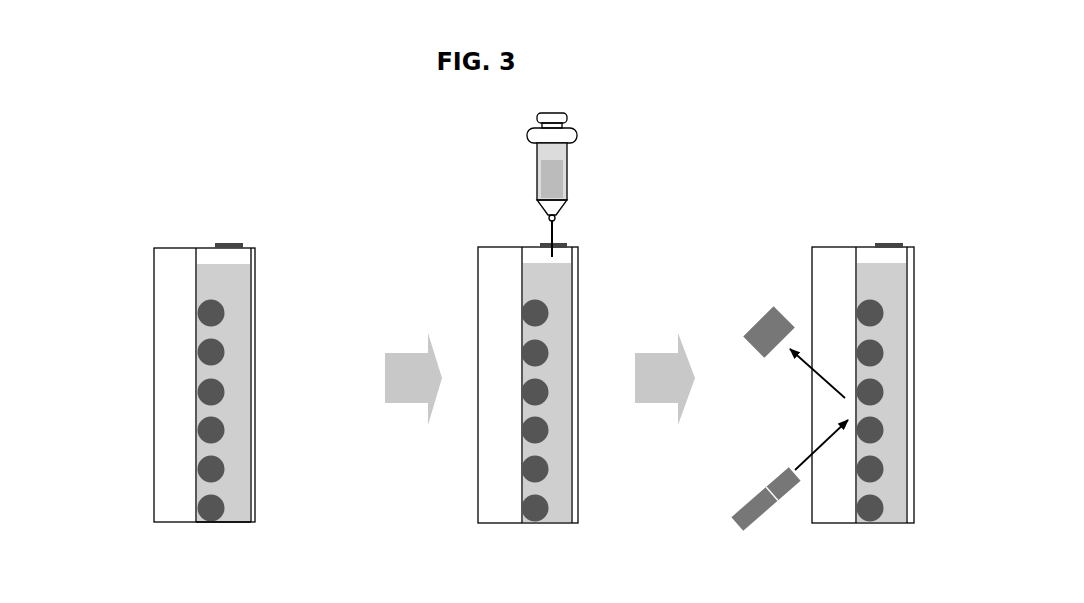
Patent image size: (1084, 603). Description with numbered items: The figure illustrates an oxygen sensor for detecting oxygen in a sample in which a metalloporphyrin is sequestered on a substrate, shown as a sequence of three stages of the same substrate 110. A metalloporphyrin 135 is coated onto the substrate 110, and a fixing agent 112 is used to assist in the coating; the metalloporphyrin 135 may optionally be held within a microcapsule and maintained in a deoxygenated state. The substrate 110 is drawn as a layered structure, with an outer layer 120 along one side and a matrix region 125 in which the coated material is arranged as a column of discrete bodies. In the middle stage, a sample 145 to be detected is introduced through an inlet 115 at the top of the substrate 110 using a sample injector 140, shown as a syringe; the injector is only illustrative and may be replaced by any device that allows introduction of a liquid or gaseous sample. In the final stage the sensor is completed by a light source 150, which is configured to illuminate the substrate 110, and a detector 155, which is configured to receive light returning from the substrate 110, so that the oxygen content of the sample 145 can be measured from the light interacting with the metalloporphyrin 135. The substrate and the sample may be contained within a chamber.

The substrate 110 is at (175, 318).
The fixing agent 112 is at (203, 410).
The inlet 115 is at (230, 243).
The outer layer 120 is at (255, 287).
The matrix layer 125 is at (232, 404).
The metalloporphyrin 135 is at (205, 515).
The sample injector 140 is at (535, 200).
The sample 145 is at (562, 198).
The light source 150 is at (767, 489).
The detector 155 is at (774, 345).